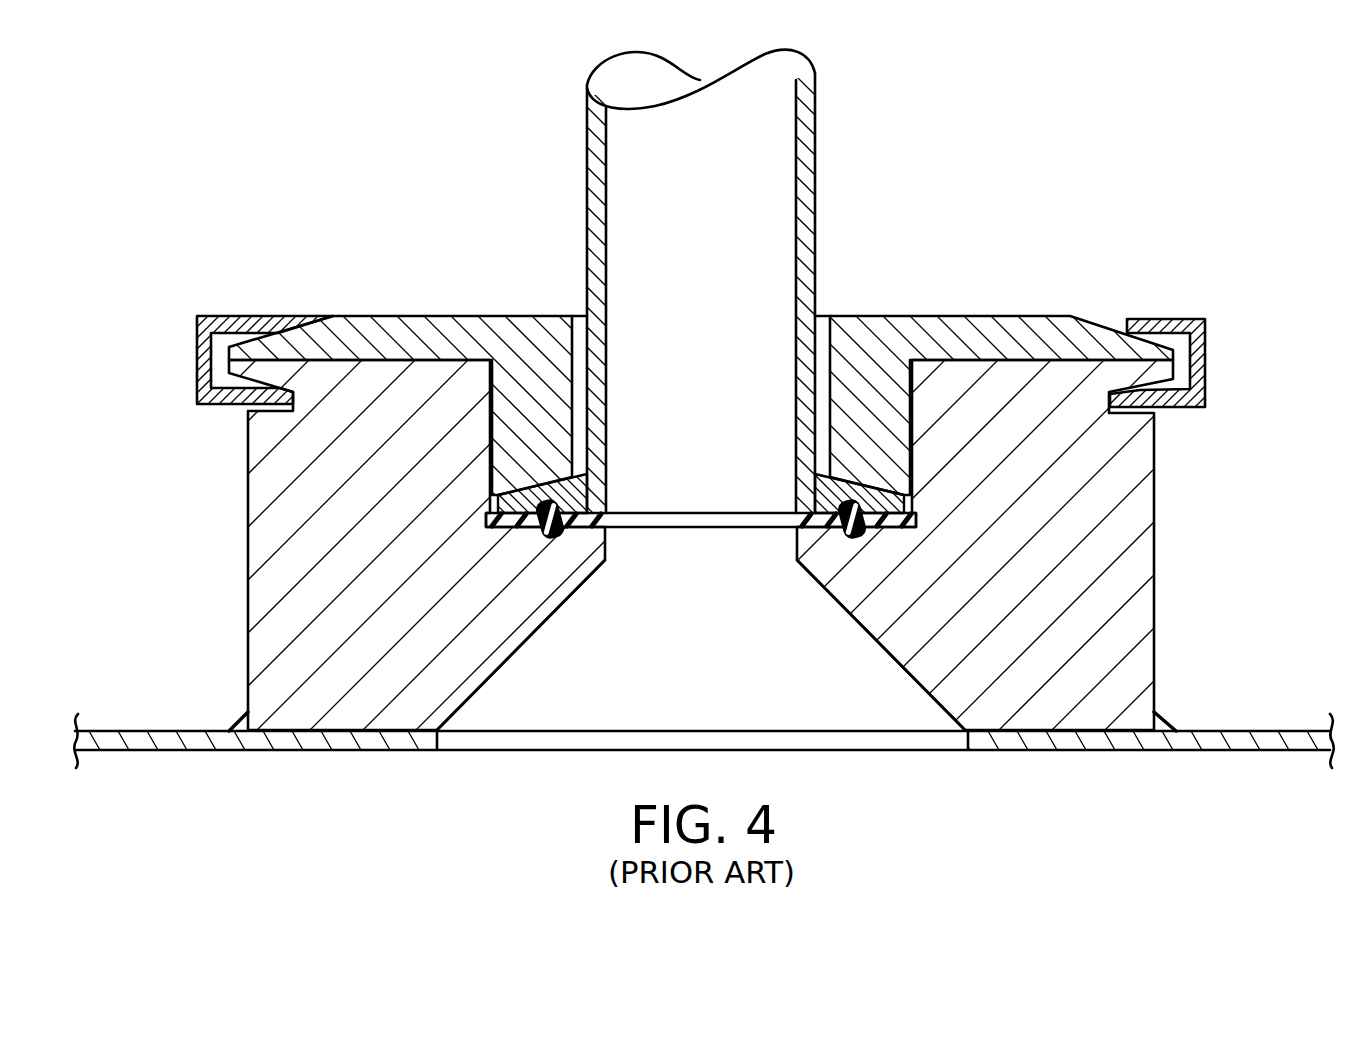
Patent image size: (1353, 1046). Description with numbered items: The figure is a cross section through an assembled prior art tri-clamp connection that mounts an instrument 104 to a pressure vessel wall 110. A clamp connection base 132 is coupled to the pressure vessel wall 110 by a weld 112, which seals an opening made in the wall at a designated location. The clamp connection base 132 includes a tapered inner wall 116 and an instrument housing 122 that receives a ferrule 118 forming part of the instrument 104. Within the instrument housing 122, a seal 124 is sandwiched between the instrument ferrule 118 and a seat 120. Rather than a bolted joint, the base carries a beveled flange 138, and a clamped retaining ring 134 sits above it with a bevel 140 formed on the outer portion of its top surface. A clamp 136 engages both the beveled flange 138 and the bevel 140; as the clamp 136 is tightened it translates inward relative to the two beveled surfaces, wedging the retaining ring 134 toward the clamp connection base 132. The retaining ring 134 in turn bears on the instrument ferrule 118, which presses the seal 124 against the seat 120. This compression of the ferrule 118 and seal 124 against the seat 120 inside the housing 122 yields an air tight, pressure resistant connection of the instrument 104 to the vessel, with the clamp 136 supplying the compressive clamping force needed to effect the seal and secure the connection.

The instrument 104 is at (817, 170).
The pressure vessel wall 110 is at (1112, 752).
The weld 112 is at (1170, 719).
The tapered inner wall 116 is at (538, 629).
The ferrule 118 is at (801, 495).
The seat 120 is at (880, 530).
The instrument housing 122 is at (912, 498).
The seal 124 is at (829, 525).
The clamp connection base 132 is at (1156, 551).
The clamped retaining ring 134 is at (1004, 317).
The clamp 136 is at (1206, 356).
The beveled flange 138 is at (246, 391).
The bevel 140 is at (290, 317).